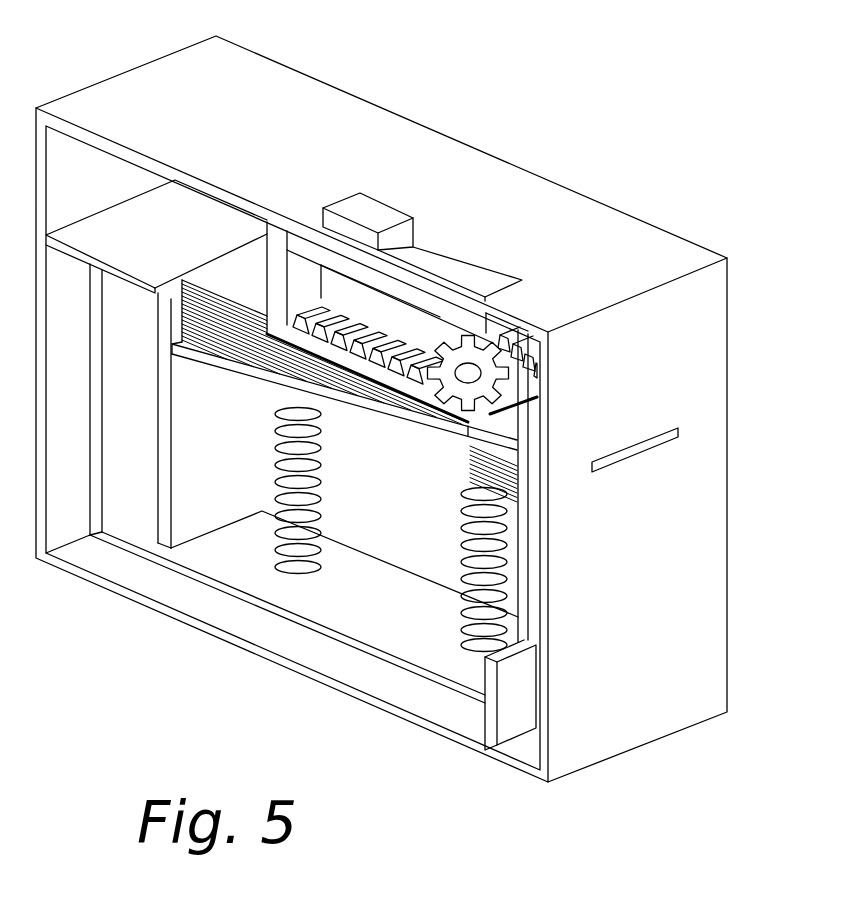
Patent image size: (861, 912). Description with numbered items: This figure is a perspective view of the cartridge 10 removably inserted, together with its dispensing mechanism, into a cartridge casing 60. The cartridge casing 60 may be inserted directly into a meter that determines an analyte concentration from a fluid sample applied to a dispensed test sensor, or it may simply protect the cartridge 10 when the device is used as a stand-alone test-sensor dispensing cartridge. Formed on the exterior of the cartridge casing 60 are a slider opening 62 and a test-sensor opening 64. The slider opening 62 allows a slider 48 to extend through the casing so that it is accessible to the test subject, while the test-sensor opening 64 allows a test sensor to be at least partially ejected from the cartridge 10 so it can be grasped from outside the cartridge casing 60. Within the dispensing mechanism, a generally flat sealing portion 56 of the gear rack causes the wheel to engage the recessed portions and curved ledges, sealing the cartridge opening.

The cartridge 10 is at (325, 602).
The slider 48 is at (384, 207).
The sealing portion 56 is at (467, 375).
The cartridge casing 60 is at (340, 88).
The slider opening 62 is at (467, 262).
The test-sensor opening 64 is at (643, 448).